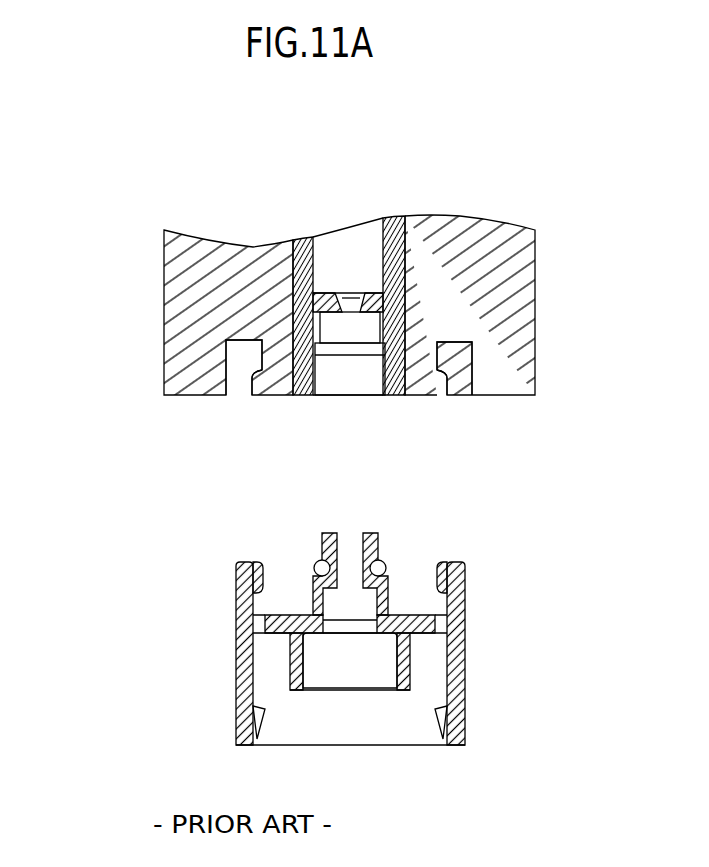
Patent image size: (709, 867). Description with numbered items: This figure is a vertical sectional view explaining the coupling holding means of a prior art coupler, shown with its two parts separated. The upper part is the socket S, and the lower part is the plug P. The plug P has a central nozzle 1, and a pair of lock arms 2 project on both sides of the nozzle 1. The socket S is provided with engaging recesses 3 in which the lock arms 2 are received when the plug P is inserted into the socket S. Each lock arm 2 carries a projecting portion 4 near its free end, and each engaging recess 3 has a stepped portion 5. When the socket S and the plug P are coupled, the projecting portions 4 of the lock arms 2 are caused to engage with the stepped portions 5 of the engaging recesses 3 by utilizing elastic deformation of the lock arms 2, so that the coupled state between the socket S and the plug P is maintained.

The nozzle 1 is at (378, 540).
The lock arm 2 is at (240, 587).
The engaging recess 3 is at (237, 372).
The projecting portion 4 is at (258, 568).
The stepped portion 5 is at (255, 376).
The socket S is at (346, 270).
The plug P is at (359, 613).